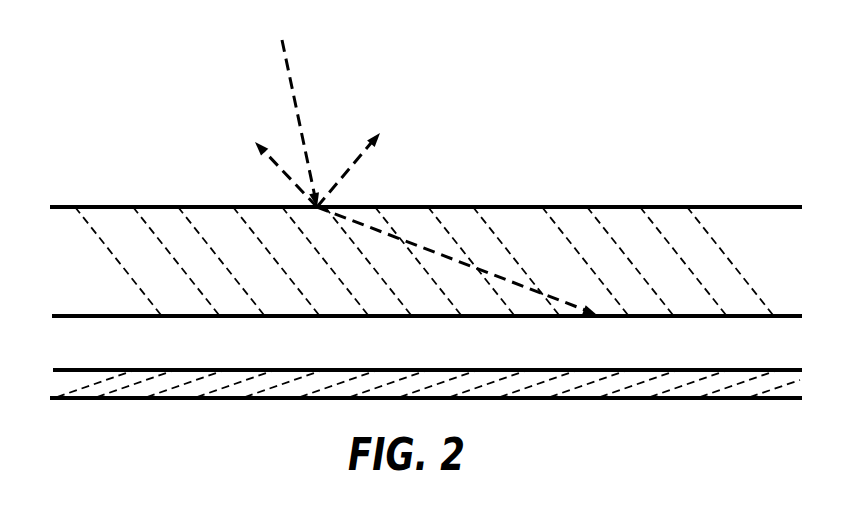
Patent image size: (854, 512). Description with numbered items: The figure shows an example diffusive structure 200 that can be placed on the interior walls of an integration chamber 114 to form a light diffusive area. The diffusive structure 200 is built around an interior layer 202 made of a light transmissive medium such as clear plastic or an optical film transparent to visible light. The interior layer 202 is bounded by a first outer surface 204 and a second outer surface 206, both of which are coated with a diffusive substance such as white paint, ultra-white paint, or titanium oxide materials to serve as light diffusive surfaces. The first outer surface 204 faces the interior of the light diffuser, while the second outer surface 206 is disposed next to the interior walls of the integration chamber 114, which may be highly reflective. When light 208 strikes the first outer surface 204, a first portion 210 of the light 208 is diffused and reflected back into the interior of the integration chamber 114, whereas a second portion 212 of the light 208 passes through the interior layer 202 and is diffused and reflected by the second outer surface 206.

The diffusive structure 200 is at (534, 113).
The interior layer 202 is at (238, 252).
The first outer surface 204 is at (610, 207).
The second outer surface 206 is at (93, 316).
The light 208 is at (295, 102).
The first portion of the light 210 is at (297, 160).
The second portion of the light 212 is at (445, 255).
The integration chamber 114 is at (296, 391).